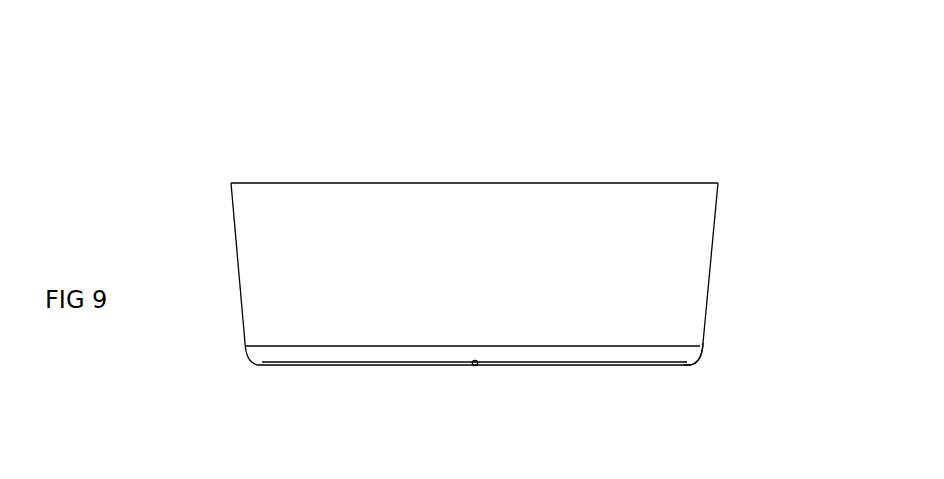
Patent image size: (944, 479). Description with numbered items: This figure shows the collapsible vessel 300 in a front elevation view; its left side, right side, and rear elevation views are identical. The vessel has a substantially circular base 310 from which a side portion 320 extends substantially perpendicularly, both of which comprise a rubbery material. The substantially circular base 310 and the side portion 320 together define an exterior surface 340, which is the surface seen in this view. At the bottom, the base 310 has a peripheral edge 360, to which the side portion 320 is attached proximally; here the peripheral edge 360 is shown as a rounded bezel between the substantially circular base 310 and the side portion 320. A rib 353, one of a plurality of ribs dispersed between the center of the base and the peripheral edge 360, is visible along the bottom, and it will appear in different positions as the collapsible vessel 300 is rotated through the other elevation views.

The collapsible vessel 300 is at (224, 124).
The substantially circular base 310 is at (348, 354).
The side portion 320 is at (257, 268).
The exterior surface 340 is at (688, 260).
The rib 353 is at (505, 366).
The peripheral edge 360 is at (704, 357).